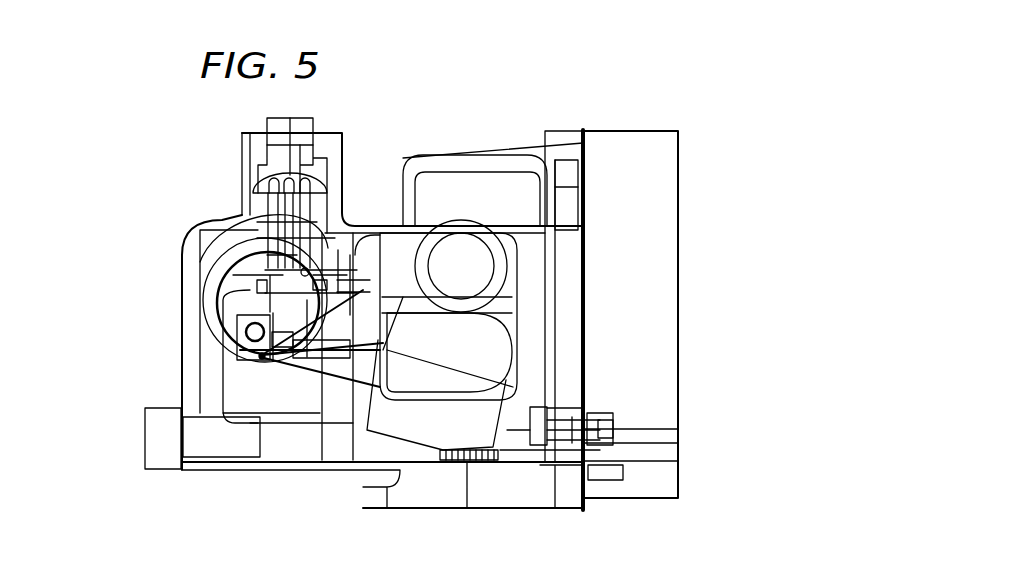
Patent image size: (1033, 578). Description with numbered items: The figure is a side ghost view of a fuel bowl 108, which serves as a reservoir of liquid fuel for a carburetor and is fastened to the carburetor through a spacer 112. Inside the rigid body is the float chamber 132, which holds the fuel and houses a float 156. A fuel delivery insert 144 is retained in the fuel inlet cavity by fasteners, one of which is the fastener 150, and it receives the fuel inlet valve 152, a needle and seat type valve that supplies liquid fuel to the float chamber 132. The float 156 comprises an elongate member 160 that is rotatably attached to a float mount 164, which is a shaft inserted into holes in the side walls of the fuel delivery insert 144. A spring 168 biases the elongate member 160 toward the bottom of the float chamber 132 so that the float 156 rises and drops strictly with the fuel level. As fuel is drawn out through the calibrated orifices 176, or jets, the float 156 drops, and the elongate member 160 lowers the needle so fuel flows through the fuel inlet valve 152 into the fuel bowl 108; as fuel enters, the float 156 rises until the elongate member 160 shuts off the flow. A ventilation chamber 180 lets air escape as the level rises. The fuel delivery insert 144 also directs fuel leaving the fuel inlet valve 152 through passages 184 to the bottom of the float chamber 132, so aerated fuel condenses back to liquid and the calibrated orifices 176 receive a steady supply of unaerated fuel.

The fuel bowl 108 is at (658, 82).
The spacer 112 is at (667, 194).
The float chamber 132 is at (537, 332).
The fuel delivery insert 144 is at (200, 257).
The fastener 150 is at (145, 440).
The fuel inlet valve 152 is at (273, 153).
The float 156 is at (513, 293).
The elongate member 160 is at (318, 372).
The float mount 164 is at (250, 337).
The spring 168 is at (260, 362).
The calibrated orifice 176 is at (530, 432).
The ventilation chamber 180 is at (473, 172).
The passage 184 is at (205, 372).